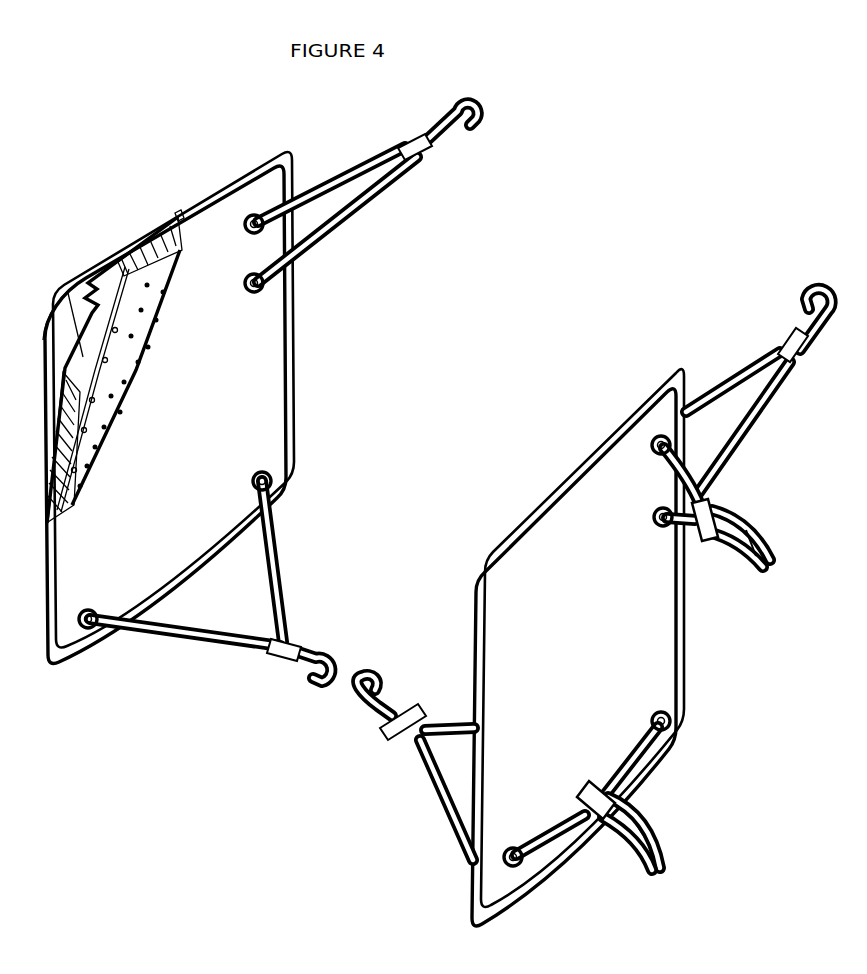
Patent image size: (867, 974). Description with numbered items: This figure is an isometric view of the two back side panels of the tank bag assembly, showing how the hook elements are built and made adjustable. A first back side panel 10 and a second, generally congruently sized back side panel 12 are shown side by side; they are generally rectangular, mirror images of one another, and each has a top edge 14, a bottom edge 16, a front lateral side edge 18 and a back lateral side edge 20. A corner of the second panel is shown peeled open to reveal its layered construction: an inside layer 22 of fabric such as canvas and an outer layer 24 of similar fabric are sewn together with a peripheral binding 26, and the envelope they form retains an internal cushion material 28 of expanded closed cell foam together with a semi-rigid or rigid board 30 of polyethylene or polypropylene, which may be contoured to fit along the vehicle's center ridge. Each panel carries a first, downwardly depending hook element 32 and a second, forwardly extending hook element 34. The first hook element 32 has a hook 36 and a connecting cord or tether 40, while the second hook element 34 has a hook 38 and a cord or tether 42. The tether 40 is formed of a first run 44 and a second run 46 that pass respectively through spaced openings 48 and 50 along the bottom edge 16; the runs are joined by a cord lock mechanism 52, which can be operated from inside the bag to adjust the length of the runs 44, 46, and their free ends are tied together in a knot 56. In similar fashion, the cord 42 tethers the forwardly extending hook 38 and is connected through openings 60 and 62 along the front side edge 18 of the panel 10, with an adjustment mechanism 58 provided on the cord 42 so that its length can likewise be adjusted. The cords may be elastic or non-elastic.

The first back side panel 10 is at (583, 614).
The second back side panel 12 is at (240, 414).
The top edge 14 is at (572, 462).
The bottom edge 16 is at (653, 770).
The front lateral side edge 18 is at (688, 620).
The back lateral side edge 20 is at (472, 618).
The inside layer 22 is at (152, 334).
The outer layer 24 is at (78, 298).
The peripheral binding 26 is at (178, 215).
The internal cushion material 28 is at (107, 420).
The board 30 is at (72, 305).
The first hook element 32 is at (373, 718).
The second hook element 34 is at (751, 423).
The hook 36 is at (822, 290).
The hook 38 is at (488, 110).
The cord 40 is at (460, 827).
The cord 42 is at (742, 437).
The first run 44 is at (427, 808).
The second run 46 is at (457, 717).
The opening 48 is at (522, 868).
The opening 50 is at (680, 705).
The cord lock mechanism 52 is at (622, 798).
The knot 56 is at (660, 832).
The adjustment mechanism 58 is at (718, 502).
The opening 60 is at (650, 456).
The opening 62 is at (658, 527).